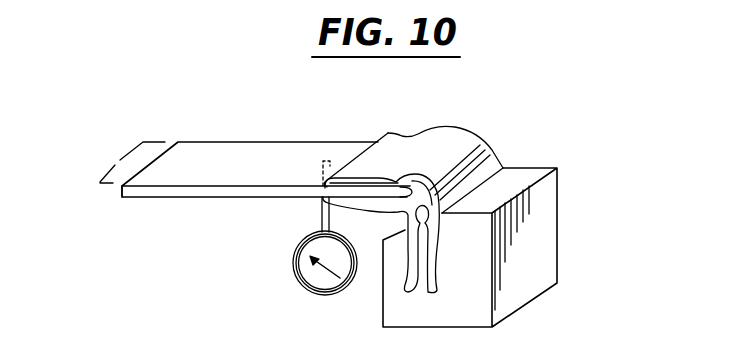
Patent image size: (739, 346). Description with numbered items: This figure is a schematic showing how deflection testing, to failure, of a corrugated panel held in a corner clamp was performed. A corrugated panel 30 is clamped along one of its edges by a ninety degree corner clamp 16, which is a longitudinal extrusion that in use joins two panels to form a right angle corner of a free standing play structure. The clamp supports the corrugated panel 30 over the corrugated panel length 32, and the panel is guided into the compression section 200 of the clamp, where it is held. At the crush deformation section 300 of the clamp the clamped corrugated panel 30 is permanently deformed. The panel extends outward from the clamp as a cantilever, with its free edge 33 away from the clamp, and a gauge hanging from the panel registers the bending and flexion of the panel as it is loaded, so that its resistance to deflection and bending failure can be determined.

The corner clamp 16 is at (493, 148).
The corrugated panel 30 is at (219, 199).
The corrugated panel length 32 is at (118, 160).
The edge of plate 33 is at (120, 188).
The compression section 200 is at (354, 186).
The crush deformation section 300 is at (395, 182).